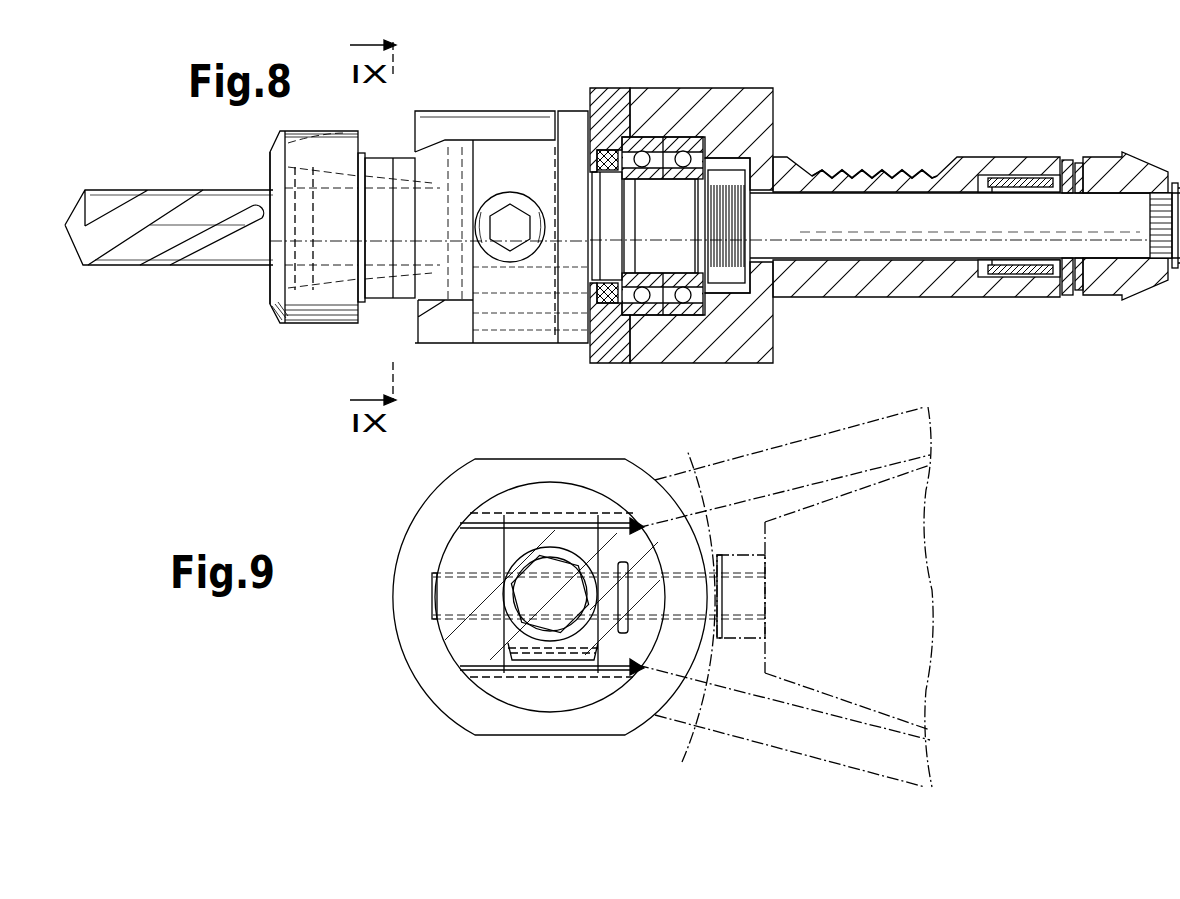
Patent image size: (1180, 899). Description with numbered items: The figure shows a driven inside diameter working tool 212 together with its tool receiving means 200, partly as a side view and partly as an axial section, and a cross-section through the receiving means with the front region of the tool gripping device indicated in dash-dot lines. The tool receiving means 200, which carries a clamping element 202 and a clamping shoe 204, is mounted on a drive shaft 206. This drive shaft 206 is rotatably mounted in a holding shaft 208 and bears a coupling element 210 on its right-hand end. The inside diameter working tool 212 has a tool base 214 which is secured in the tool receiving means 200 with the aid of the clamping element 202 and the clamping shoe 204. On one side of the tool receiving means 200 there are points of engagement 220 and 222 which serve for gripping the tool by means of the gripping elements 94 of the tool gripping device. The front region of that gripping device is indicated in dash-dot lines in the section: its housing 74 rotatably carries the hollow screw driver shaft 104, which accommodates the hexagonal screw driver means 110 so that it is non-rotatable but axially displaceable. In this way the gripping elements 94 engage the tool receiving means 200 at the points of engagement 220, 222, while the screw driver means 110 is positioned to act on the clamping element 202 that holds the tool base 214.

In FIG. 9, the housing 74 is at (958, 468).
In FIG. 9, the gripping elements 94 is at (812, 455).
In FIG. 9, the screw driver shaft 104 is at (690, 623).
In FIG. 9, the screw driver means 110 is at (678, 590).
In FIG. 8, the tool receiving means 200 is at (558, 100).
In FIG. 9, the tool receiving means 200 is at (440, 678).
In FIG. 8, the clamping element 202 is at (520, 252).
In FIG. 9, the clamping element 202 is at (435, 600).
In FIG. 8, the clamping shoe 204 is at (497, 122).
In FIG. 9, the clamping shoe 204 is at (490, 493).
In FIG. 8, the drive shaft 206 is at (810, 200).
In FIG. 8, the holding shaft 208 is at (958, 175).
In FIG. 8, the coupling element 210 is at (1113, 175).
In FIG. 8, the inside diameter working tool 212 is at (262, 328).
In FIG. 8, the tool base 214 is at (423, 303).
In FIG. 9, the tool base 214 is at (472, 633).
In FIG. 9, the point of engagement 220 is at (657, 485).
In FIG. 9, the point of engagement 222 is at (640, 703).